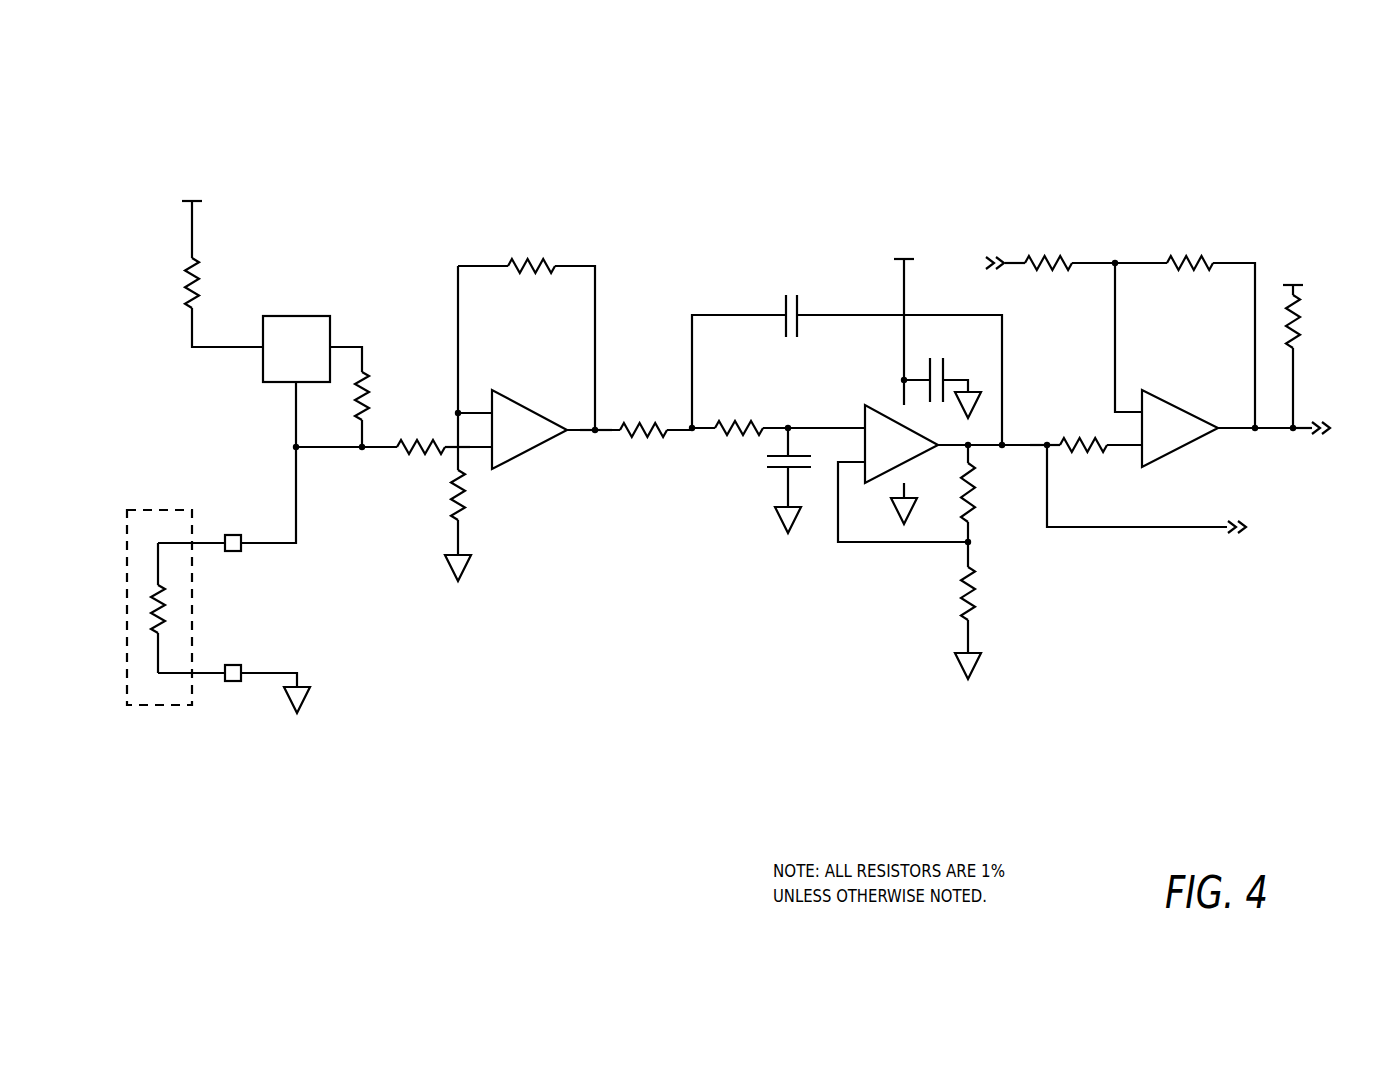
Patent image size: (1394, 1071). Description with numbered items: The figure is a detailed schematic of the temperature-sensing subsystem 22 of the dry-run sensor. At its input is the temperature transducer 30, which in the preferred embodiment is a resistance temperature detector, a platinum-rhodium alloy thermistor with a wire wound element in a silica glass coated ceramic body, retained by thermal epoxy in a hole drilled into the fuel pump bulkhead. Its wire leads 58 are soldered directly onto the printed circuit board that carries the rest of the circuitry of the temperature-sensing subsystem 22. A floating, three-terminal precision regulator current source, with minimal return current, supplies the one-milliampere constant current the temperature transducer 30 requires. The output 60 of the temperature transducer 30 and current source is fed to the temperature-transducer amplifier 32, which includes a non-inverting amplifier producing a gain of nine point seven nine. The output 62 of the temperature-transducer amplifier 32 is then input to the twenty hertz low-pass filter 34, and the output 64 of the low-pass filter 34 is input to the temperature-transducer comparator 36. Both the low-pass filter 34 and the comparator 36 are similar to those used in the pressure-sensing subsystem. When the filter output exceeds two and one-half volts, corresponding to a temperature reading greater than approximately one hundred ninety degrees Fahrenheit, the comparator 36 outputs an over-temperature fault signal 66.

The temperature-sensing subsystem 22 is at (838, 196).
The temperature transducer 30 is at (147, 512).
The temperature-transducer amplifier 32 is at (612, 603).
The 20 Hz low-pass filter 34 is at (1018, 685).
The temperature-transducer comparator 36 is at (1328, 605).
The wire leads 58 is at (205, 543).
The output of the temperature transducer and current source 60 is at (450, 450).
The output of the temperature-transducer amplifier 62 is at (605, 432).
The output of the low-pass filter 64 is at (1038, 442).
The over-temperature fault signal 66 is at (1310, 432).